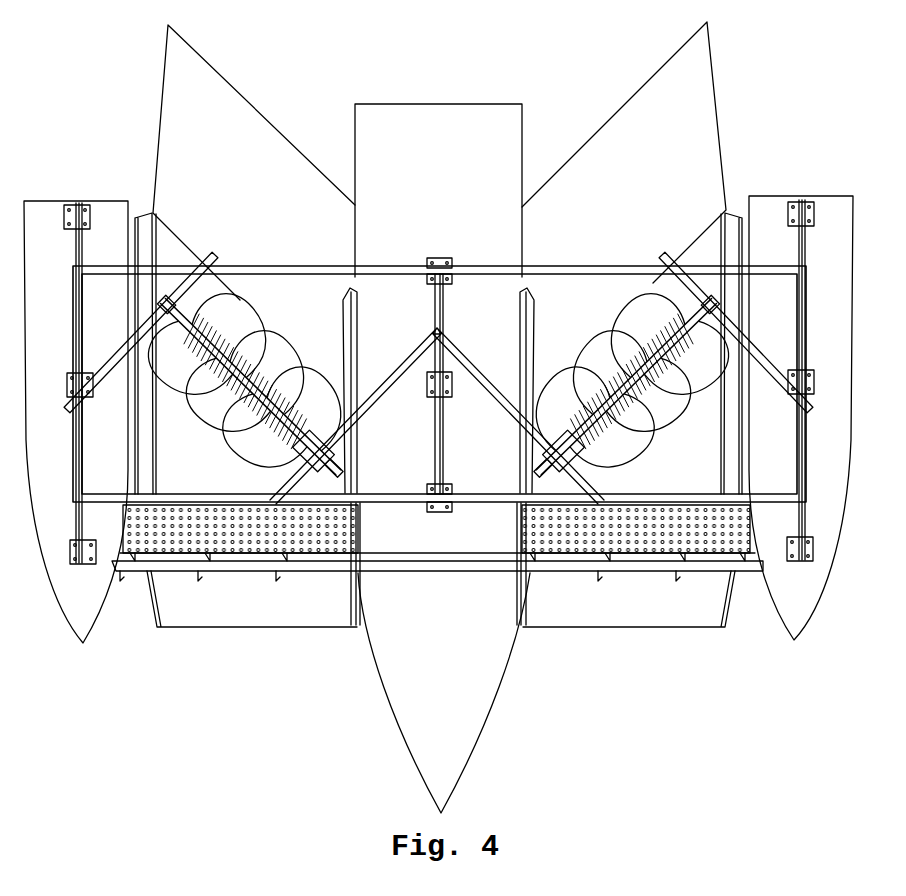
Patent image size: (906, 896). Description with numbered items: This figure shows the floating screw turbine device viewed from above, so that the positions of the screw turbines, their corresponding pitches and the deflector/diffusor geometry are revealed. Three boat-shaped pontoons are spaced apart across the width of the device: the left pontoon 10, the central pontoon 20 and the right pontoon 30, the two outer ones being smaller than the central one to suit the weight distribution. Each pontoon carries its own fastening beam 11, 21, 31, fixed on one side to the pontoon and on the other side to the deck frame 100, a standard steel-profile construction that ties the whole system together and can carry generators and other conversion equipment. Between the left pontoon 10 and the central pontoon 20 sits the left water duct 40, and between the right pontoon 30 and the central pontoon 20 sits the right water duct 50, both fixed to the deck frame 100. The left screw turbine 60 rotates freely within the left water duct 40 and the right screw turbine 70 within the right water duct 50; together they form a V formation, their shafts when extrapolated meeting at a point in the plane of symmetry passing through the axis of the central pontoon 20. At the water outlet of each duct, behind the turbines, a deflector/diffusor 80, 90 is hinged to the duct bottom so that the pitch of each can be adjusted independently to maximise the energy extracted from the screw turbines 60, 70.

The left pontoon 10 is at (35, 216).
The fastening beam 11 is at (82, 222).
The central pontoon 20 is at (447, 118).
The fastening beam 21 is at (442, 412).
The right pontoon 30 is at (825, 210).
The fastening beam 31 is at (802, 243).
The left water duct 40 is at (165, 243).
The right water duct 50 is at (716, 235).
The left screw turbine 60 is at (245, 313).
The right screw turbine 70 is at (635, 310).
The deflector/diffusor 80 is at (176, 84).
The deflector/diffusor 90 is at (695, 87).
The deck frame 100 is at (377, 498).